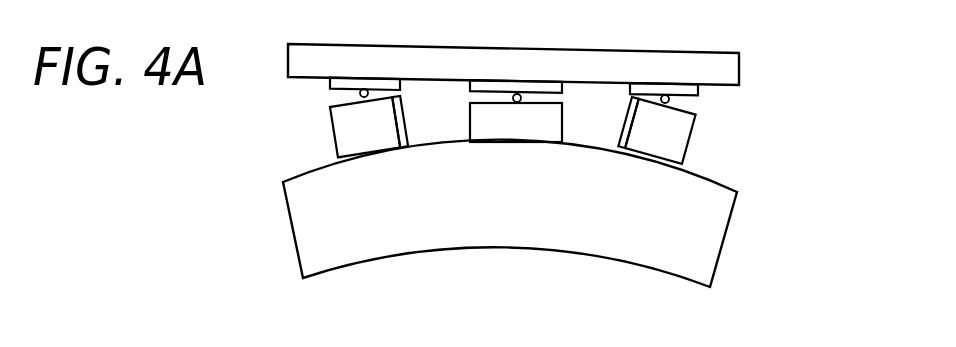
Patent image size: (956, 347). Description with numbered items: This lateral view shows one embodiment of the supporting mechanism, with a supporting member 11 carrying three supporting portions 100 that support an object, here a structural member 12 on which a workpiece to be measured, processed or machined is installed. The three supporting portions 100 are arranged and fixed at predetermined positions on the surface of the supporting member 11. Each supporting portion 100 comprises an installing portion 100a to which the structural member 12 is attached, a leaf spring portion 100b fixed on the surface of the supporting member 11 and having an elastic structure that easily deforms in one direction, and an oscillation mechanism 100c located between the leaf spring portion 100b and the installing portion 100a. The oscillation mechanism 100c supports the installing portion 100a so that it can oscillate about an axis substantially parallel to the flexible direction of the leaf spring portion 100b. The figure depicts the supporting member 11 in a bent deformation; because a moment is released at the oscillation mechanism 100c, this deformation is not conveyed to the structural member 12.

The structural member 12 is at (715, 65).
The supporting member 11 is at (713, 231).
The supporting portion 100 is at (609, 130).
The installing portion 100a is at (697, 89).
The leaf spring portion 100b is at (670, 147).
The oscillation mechanism 100c is at (673, 101).